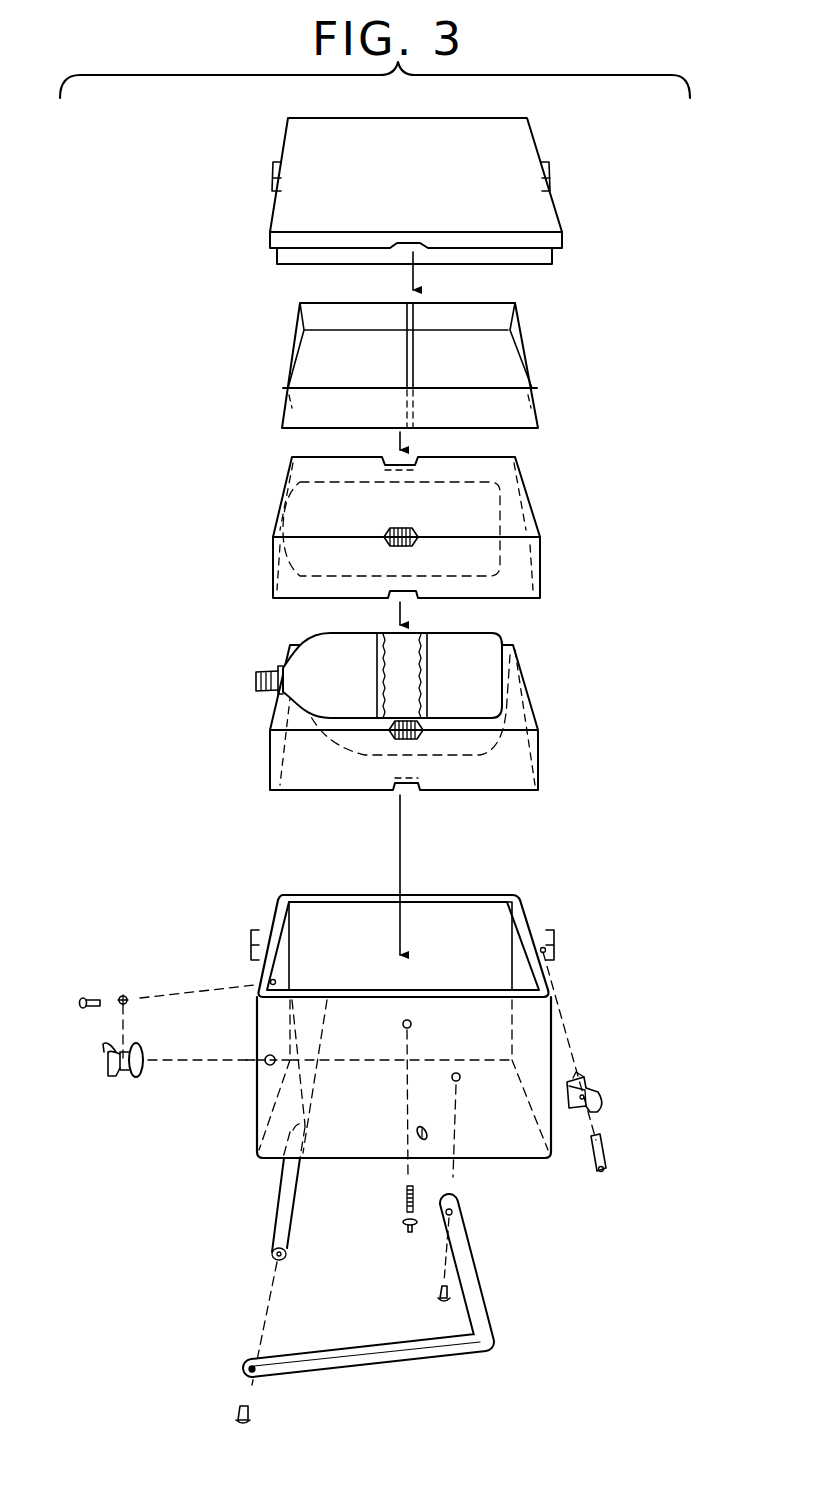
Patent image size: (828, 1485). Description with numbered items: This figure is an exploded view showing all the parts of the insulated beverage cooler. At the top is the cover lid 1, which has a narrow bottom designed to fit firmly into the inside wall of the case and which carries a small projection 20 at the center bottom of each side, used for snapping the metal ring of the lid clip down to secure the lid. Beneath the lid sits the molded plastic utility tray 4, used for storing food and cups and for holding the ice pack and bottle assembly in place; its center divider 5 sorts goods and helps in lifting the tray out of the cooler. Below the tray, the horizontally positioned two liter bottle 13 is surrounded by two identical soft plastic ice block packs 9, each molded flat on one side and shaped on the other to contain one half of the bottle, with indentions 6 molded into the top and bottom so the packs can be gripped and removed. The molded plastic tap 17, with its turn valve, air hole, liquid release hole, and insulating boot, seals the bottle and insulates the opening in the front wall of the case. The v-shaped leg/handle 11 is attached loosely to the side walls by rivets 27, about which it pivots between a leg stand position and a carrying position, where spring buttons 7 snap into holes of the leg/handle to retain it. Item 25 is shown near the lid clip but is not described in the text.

The cover lid 1 is at (540, 217).
The projection 20 is at (556, 163).
The utility tray 4 is at (525, 412).
The center divider 5 is at (413, 366).
The ice block packs 9 is at (540, 573).
The indentions 6 is at (410, 465).
The 2 liter bottle 13 is at (300, 664).
The spring buttons 7 is at (400, 1026).
The rivets 27 is at (459, 1082).
The tap 17 is at (137, 1078).
The latch 25 is at (598, 1094).
The leg/handle 11 is at (393, 1366).